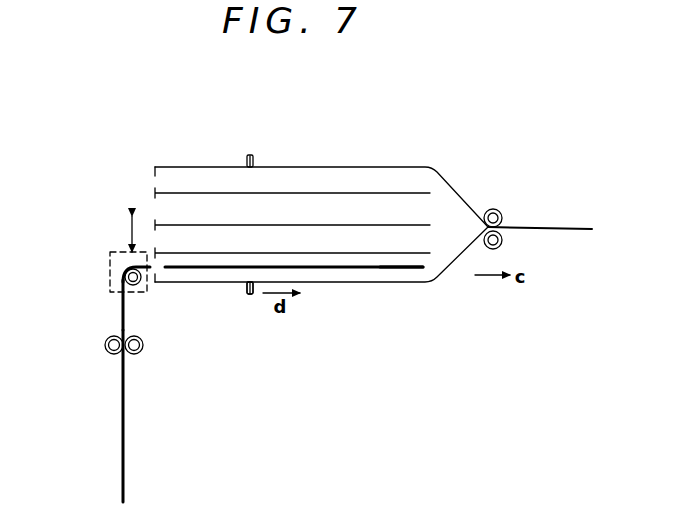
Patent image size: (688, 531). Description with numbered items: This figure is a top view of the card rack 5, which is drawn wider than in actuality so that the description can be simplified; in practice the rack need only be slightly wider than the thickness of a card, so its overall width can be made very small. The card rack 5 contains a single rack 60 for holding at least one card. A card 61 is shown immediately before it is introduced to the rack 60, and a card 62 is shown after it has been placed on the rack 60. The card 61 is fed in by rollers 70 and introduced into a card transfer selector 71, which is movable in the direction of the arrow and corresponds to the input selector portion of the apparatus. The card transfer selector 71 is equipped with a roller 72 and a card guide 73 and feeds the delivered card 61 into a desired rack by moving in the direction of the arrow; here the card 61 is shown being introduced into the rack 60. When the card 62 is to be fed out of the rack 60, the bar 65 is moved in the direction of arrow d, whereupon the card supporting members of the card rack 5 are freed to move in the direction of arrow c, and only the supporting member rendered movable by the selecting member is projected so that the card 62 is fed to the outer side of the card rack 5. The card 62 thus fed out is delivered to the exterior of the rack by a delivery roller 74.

The card rack 5 is at (322, 137).
The rack 60 is at (333, 284).
The card 61 is at (122, 404).
The card 62 is at (385, 270).
The bar 65 is at (250, 297).
The rollers 70 is at (109, 354).
The card transfer selector 71 is at (108, 270).
The roller 72 is at (130, 269).
The card guide 73 is at (120, 305).
The delivery roller 74 is at (503, 221).